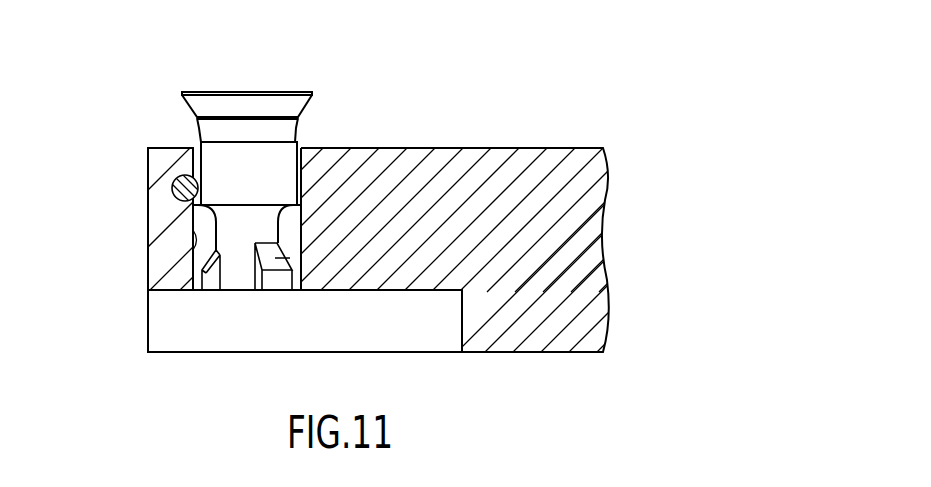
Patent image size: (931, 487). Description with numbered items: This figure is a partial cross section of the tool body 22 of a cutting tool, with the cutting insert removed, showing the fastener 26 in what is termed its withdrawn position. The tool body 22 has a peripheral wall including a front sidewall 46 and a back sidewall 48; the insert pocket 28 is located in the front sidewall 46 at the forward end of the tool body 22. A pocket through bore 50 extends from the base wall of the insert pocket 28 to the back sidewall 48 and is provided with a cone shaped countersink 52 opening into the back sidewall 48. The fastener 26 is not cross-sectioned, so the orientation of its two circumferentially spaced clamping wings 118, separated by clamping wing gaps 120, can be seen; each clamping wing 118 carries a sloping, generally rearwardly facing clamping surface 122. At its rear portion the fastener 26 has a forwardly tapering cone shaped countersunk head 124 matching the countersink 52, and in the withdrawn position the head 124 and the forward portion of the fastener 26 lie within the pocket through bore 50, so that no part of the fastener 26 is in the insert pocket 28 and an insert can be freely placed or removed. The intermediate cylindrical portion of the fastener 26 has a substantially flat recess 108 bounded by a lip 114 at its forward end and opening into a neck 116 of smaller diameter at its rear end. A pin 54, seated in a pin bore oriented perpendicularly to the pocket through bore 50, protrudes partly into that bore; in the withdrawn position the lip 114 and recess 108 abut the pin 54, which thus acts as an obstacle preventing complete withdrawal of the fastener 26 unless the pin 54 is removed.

The tool body 22 is at (461, 174).
The fastener 26 is at (257, 209).
The insert pocket 28 is at (177, 316).
The front sidewall 46 is at (523, 352).
The back sidewall 48 is at (557, 150).
The pocket through bore 50 is at (193, 257).
The cone shaped countersink 52 is at (303, 147).
The pin 54 is at (173, 183).
The recess 108 is at (200, 152).
The lip 114 is at (193, 208).
The neck 116 is at (303, 132).
The clamping wings 118 is at (213, 283).
The clamping wing gaps 120 is at (238, 276).
The clamping surface 122 is at (361, 358).
The countersunk head 124 is at (287, 105).